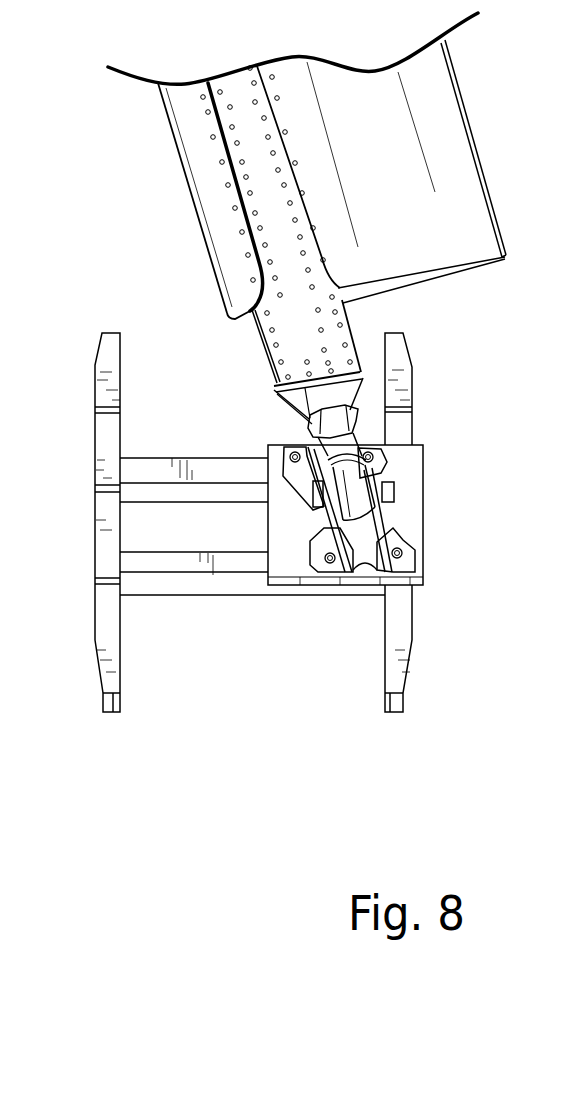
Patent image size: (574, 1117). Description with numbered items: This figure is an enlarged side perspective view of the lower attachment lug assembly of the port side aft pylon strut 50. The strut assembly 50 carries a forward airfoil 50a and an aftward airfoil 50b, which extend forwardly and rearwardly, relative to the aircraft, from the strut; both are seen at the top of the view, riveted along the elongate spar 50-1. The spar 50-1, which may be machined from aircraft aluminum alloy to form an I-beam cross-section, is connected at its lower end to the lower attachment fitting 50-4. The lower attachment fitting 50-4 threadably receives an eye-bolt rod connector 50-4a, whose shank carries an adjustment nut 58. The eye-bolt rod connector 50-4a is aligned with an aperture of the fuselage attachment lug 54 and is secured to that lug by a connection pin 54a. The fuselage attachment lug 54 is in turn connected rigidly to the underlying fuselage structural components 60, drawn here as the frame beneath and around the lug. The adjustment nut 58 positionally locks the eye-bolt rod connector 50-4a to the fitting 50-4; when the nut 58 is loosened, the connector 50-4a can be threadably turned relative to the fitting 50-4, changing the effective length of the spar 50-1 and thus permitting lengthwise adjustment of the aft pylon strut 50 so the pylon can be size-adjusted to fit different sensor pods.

The pylon strut assembly 50 is at (188, 244).
The forward airfoil 50a is at (190, 115).
The aftward airfoil 50b is at (420, 218).
The elongate spar 50-1 is at (330, 335).
The lower attachment fitting 50-4 is at (280, 395).
The eye-bolt rod connector 50-4a is at (357, 505).
The fuselage attachment lug 54 is at (377, 522).
The connection pin 54a is at (303, 503).
The adjustment nut 58 is at (355, 441).
The fuselage structural components 60 is at (107, 562).